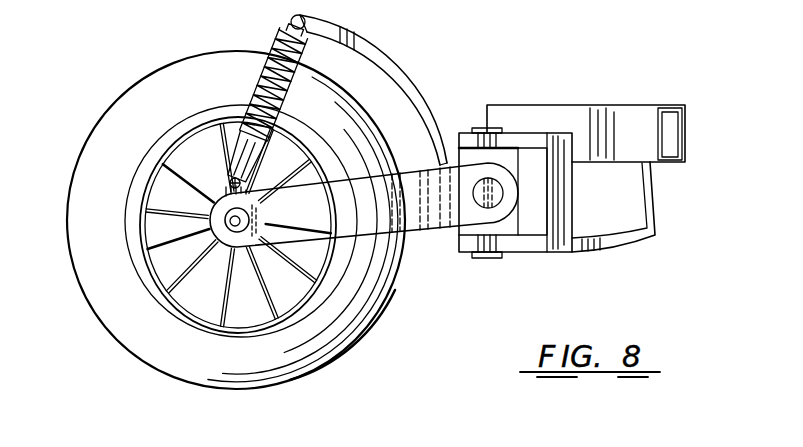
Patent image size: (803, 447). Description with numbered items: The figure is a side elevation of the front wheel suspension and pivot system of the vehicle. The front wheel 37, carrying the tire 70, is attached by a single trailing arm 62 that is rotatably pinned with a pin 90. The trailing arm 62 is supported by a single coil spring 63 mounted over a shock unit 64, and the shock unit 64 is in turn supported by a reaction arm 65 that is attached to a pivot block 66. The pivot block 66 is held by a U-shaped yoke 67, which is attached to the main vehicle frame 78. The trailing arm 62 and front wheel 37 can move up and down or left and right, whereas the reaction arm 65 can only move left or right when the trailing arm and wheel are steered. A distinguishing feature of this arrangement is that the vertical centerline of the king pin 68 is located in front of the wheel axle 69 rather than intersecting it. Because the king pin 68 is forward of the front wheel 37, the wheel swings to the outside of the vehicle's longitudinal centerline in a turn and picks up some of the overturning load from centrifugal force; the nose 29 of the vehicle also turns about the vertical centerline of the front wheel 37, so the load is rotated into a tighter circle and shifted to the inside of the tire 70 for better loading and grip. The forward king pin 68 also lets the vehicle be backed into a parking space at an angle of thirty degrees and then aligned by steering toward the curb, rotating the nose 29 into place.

The nose 29 is at (665, 201).
The front wheel 37 is at (138, 157).
The trailing arm 62 is at (403, 270).
The coil spring 63 is at (283, 30).
The shock unit 64 is at (268, 54).
The reaction arm 65 is at (371, 50).
The pivot block 66 is at (513, 157).
The U-shaped yoke 67 is at (547, 254).
The king pin 68 is at (493, 259).
The wheel axle 69 is at (250, 220).
The tire 70 is at (166, 98).
The main vehicle frame 78 is at (628, 122).
The pin 90 is at (480, 182).